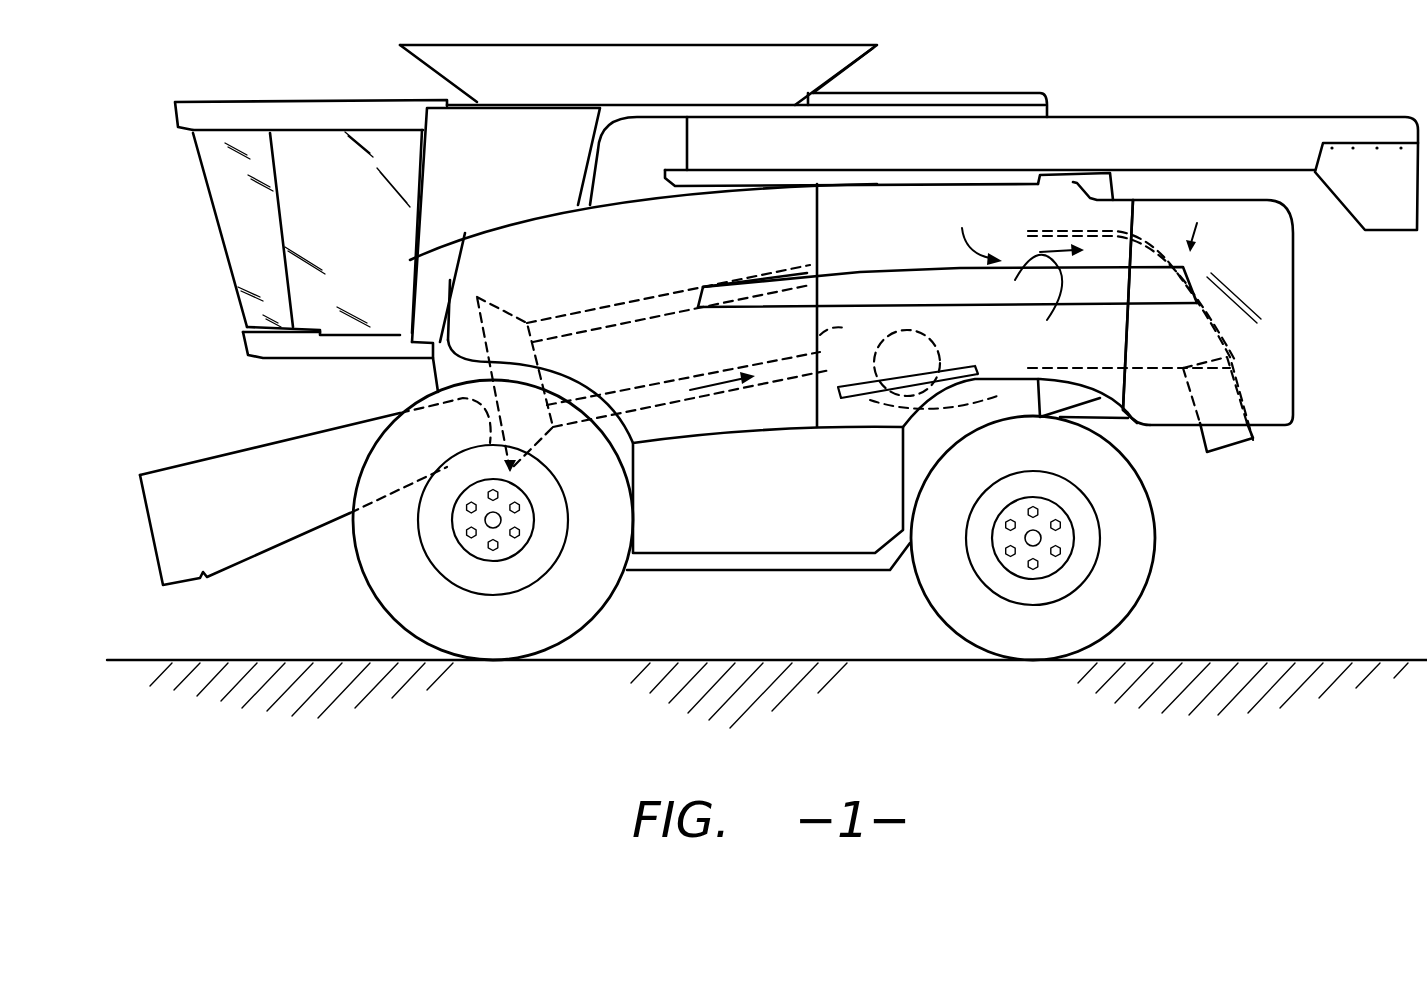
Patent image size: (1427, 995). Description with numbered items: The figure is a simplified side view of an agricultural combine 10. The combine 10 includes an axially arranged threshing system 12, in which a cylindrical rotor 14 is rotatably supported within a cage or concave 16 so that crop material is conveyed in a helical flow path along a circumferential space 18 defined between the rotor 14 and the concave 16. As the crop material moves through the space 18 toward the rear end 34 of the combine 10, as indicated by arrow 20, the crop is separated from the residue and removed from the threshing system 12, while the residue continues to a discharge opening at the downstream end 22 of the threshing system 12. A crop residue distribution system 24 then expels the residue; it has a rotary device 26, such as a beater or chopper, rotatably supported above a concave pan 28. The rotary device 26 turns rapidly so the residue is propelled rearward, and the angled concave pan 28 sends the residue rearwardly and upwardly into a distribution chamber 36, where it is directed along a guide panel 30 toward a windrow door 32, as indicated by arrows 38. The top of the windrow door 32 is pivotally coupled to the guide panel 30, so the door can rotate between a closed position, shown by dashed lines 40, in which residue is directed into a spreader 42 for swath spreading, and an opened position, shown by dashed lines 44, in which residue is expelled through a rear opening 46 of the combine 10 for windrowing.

The agricultural combine 10 is at (1192, 82).
The threshing system 12 is at (597, 297).
The cylindrical rotor 14 is at (663, 313).
The concave 16 is at (693, 400).
The circumferential space 18 is at (650, 400).
The arrow 20 is at (733, 392).
The downstream end 22 is at (830, 317).
The crop residue distribution system 24 is at (973, 230).
The rotary device 26 is at (857, 402).
The concave pan 28 is at (838, 402).
The guide panel 30 is at (1073, 233).
The windrow door 32 is at (1172, 243).
The rear end 34 is at (1300, 320).
The distribution chamber 36 is at (1106, 347).
The arrows 38 is at (1048, 295).
The dashed lines 40 is at (1210, 327).
The spreader 42 is at (1233, 450).
The dashed lines 44 is at (1203, 268).
The rear opening 46 is at (1243, 332).